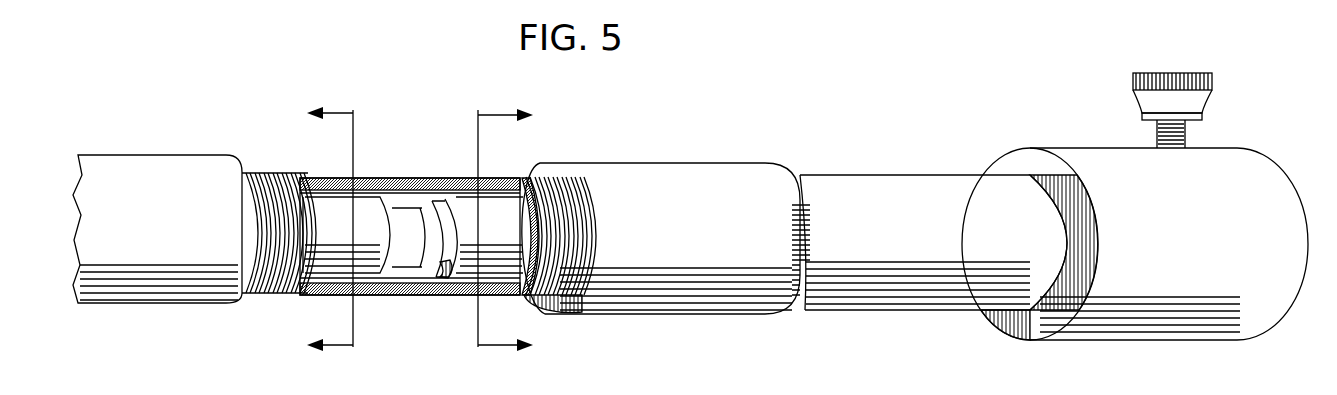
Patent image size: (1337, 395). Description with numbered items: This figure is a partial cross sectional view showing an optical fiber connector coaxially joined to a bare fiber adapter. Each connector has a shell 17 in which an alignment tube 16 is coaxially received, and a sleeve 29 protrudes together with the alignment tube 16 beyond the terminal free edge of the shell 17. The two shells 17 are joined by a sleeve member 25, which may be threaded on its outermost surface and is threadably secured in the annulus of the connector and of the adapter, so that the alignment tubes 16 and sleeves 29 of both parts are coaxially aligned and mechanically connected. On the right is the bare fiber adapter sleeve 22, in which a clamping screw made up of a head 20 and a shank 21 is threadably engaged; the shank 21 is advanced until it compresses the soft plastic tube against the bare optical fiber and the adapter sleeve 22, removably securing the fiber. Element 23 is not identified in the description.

The alignment tube 16 is at (340, 232).
The shell 17 is at (176, 235).
The head 20 is at (1213, 83).
The shank 21 is at (1188, 135).
The adapter sleeve 22 is at (1286, 175).
The rod 23 is at (872, 175).
The sleeve member 25 is at (402, 178).
The sleeve 29 is at (418, 272).